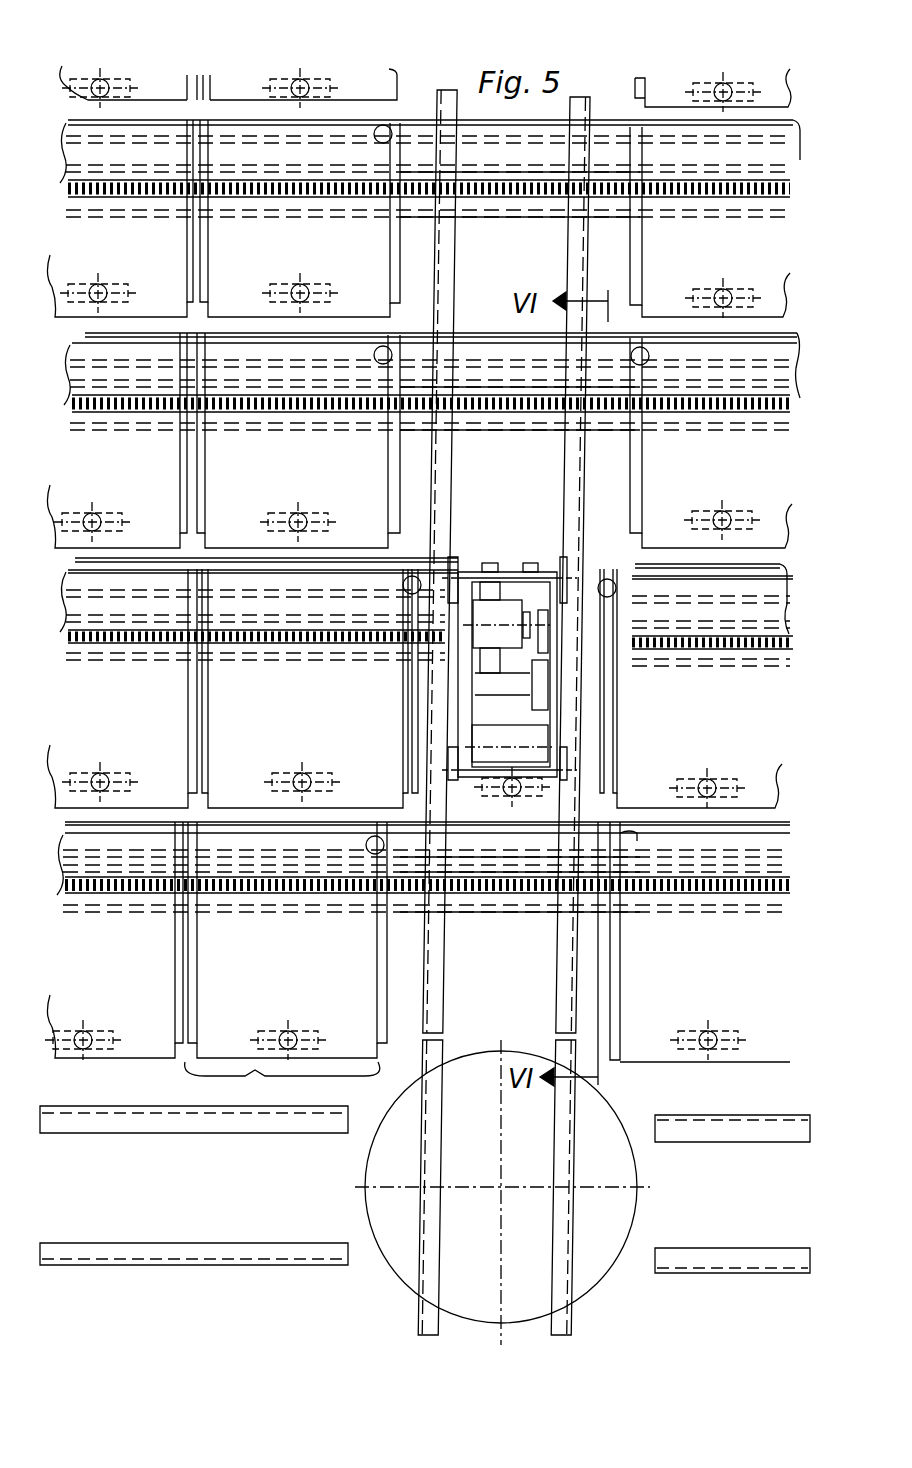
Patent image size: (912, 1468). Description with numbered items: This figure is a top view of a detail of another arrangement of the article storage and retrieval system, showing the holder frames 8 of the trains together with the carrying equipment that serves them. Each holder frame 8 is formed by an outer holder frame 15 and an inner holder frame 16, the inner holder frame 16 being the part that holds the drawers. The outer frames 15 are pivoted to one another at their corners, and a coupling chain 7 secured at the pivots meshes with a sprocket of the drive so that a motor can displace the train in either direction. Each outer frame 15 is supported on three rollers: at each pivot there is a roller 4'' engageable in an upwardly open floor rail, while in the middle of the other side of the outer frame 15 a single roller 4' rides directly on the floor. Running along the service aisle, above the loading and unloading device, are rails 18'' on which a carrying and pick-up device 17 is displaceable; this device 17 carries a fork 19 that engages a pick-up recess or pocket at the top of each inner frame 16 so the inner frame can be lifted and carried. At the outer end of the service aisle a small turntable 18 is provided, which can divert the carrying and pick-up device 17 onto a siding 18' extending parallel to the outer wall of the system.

The single roller 4' is at (201, 767).
The roller 4'' is at (259, 591).
The coupling chain 7 is at (483, 428).
The holder frame 8 is at (282, 1082).
The outer holder frame 15 is at (207, 674).
The inner holder frame 16 is at (268, 947).
The carrying and pick-up device 17 is at (462, 716).
The turntable 18 is at (518, 1192).
The siding 18' is at (425, 1189).
The rails 18'' is at (504, 712).
The fork 19 is at (535, 563).